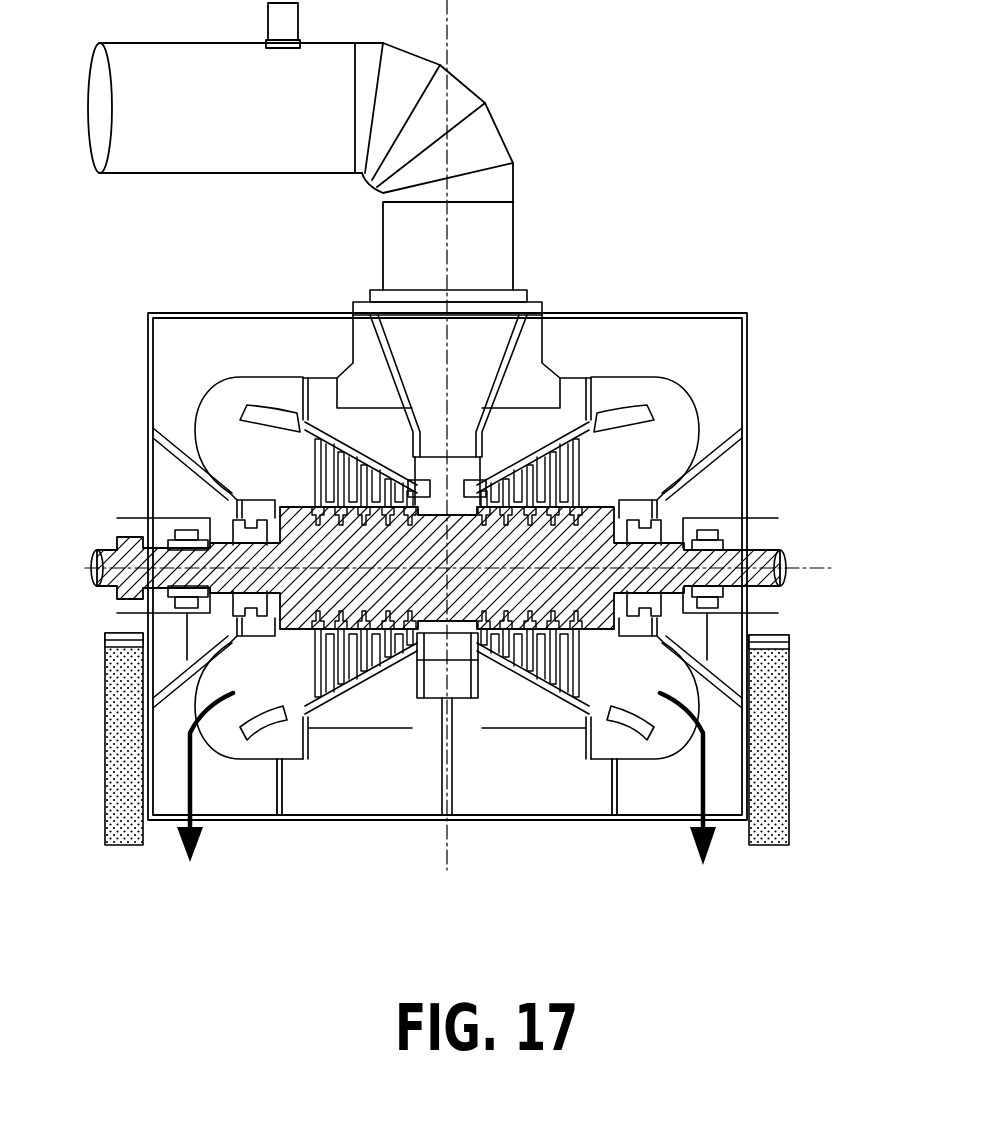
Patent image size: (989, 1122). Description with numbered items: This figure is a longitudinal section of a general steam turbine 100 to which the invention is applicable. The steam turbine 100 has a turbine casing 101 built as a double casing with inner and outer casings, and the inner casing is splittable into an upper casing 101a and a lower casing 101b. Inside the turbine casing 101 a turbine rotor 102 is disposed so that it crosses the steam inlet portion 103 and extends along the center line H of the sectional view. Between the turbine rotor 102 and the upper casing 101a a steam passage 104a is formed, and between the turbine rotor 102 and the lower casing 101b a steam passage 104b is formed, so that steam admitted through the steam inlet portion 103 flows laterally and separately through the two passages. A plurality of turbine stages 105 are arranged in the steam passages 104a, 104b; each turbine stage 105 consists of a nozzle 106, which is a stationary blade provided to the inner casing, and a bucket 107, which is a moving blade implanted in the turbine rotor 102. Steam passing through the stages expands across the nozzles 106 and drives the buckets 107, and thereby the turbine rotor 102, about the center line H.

The steam turbine 100 is at (709, 198).
The turbine casing 101 is at (141, 383).
The upper casing 101a is at (345, 372).
The lower casing 101b is at (370, 703).
The turbine rotor 102 is at (668, 578).
The steam inlet portion 103 is at (457, 422).
The steam passage 104a is at (325, 482).
The steam passage 104b is at (572, 468).
The turbine stage 105 is at (640, 237).
The nozzle 106 is at (482, 440).
The bucket 107 is at (500, 455).
The center line H is at (840, 566).